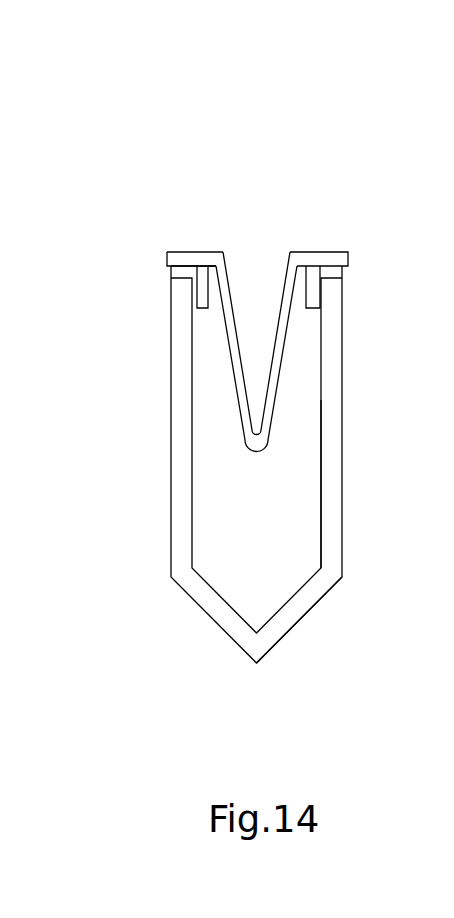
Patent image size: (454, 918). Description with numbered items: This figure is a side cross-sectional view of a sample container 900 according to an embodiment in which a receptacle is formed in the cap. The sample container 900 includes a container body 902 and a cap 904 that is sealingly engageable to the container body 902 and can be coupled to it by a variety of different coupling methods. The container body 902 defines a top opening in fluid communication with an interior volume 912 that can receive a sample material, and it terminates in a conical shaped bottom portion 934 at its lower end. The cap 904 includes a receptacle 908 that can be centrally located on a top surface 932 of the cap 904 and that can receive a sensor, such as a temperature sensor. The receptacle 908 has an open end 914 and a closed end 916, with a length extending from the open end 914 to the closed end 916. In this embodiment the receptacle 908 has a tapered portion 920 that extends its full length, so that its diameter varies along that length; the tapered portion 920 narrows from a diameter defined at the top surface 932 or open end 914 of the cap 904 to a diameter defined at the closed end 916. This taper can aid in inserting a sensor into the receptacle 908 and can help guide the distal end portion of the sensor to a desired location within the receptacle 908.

The sample container 900 is at (338, 177).
The container body 902 is at (170, 507).
The cap 904 is at (170, 250).
The receptacle 908 is at (260, 333).
The interior volume 912 is at (307, 515).
The open end 914 is at (290, 252).
The closed end 916 is at (243, 447).
The tapered portion 920 is at (229, 283).
The top surface 932 is at (197, 252).
The conical shaped bottom portion 934 is at (309, 612).